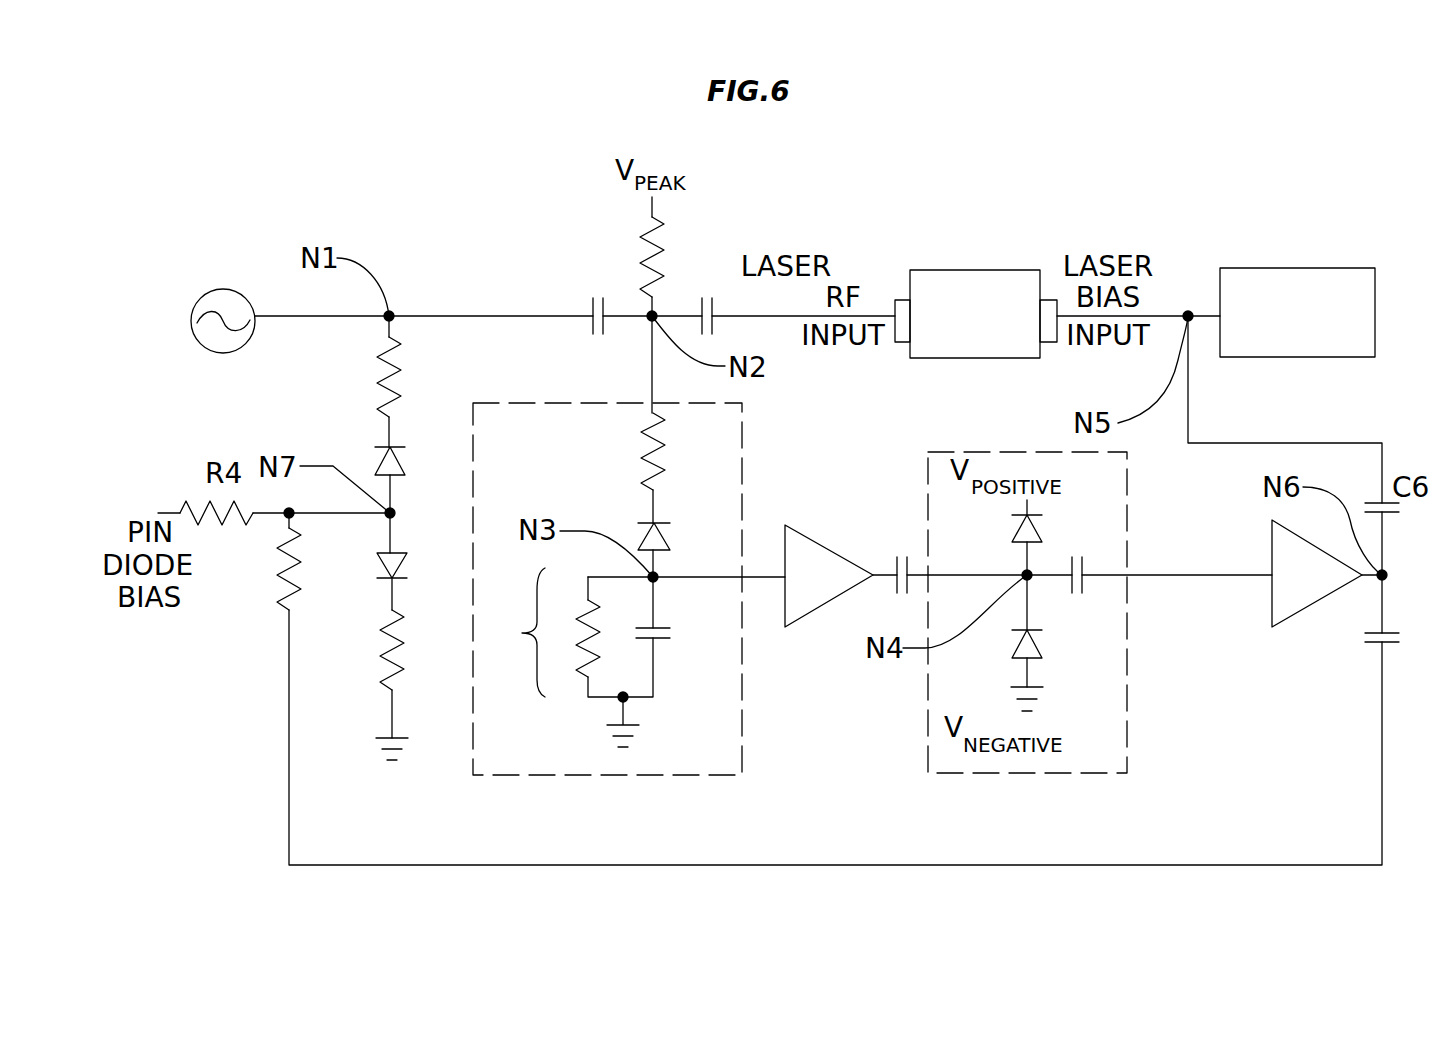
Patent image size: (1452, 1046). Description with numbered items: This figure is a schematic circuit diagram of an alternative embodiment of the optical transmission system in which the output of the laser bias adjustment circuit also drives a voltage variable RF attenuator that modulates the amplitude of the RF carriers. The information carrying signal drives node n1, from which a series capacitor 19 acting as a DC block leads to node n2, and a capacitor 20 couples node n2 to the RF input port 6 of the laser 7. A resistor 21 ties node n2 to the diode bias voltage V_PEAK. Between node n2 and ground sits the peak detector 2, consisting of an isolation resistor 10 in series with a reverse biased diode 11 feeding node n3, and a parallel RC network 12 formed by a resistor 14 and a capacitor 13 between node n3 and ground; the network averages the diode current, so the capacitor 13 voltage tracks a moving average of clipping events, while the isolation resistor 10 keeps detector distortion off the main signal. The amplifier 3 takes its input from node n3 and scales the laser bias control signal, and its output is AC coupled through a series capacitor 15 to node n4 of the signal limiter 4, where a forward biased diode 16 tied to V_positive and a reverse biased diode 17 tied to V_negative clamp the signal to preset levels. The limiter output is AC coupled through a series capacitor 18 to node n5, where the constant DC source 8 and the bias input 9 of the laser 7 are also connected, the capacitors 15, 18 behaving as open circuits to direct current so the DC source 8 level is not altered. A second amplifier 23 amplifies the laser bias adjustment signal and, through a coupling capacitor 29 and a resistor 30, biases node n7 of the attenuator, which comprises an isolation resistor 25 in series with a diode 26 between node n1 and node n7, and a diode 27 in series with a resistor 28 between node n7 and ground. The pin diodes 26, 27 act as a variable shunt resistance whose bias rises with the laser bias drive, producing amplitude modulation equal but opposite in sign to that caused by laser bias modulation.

The peak detector 2 is at (742, 745).
The amplifier 3 is at (806, 623).
The signal limiter 4 is at (1127, 757).
The RF input port 6 is at (895, 342).
The laser 7 is at (977, 270).
The DC source 8 is at (1297, 268).
The bias input 9 is at (1057, 342).
The isolation resistor 10 is at (643, 468).
The reverse biased diode 11 is at (650, 525).
The parallel RC network 12 is at (540, 632).
The capacitor 13 is at (667, 640).
The resistor 14 is at (578, 668).
The series capacitor 15 is at (906, 560).
The forward biased diode 16 is at (1042, 530).
The reverse biased diode 17 is at (1042, 645).
The series capacitor 18 is at (1085, 586).
The series capacitor 19 is at (590, 328).
The capacitor 20 is at (718, 307).
The resistor 21 is at (667, 227).
The second amplifier 23 is at (1320, 600).
The isolation resistor 25 is at (402, 372).
The diode 26 is at (384, 447).
The diode 27 is at (380, 582).
The resistor 28 is at (390, 684).
The coupling capacitor 29 is at (1371, 645).
The resistor 30 is at (277, 581).